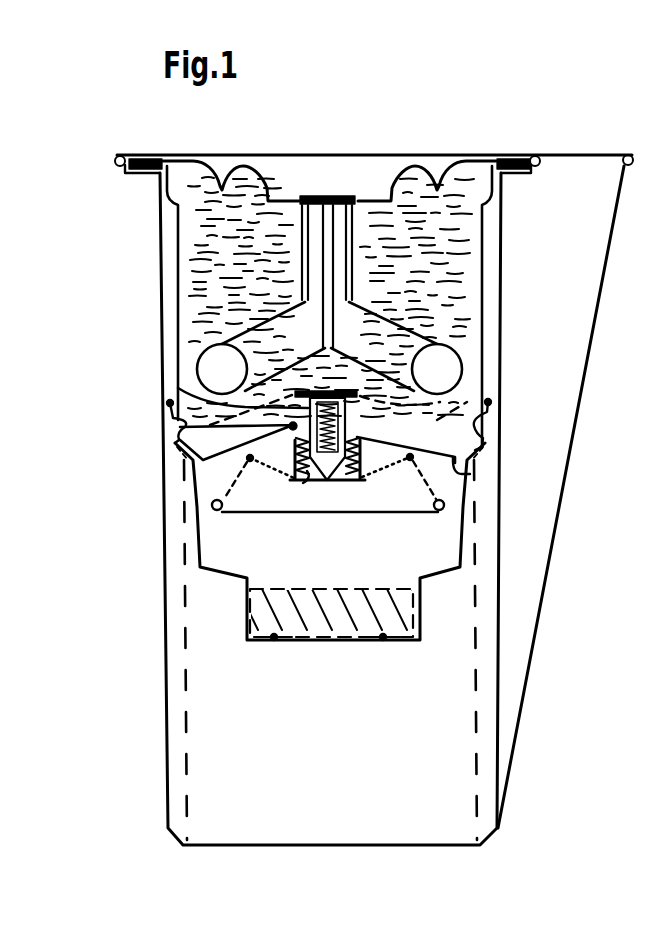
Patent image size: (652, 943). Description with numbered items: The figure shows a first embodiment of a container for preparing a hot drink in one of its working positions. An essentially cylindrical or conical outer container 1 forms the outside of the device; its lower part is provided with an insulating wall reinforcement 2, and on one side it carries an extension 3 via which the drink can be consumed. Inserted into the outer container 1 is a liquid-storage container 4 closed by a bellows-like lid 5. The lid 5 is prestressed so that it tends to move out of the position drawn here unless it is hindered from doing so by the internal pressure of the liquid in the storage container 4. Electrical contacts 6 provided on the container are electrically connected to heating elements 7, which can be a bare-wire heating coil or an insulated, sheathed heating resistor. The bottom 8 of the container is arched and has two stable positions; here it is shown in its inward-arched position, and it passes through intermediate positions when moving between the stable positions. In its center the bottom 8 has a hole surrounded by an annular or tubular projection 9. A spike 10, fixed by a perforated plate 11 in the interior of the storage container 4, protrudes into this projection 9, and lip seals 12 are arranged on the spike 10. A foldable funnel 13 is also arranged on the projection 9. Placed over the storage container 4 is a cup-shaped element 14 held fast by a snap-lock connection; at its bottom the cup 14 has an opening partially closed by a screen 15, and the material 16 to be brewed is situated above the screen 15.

The outer container 1 is at (210, 801).
The insulating wall reinforcement 2 is at (166, 616).
The extension 3 is at (568, 386).
The liquid-storage container 4 is at (184, 284).
The bellows-like lid 5 is at (242, 163).
The electrical contacts 6 is at (330, 197).
The heating elements 7 is at (461, 364).
The bottom 8 is at (470, 475).
The annular or tubular projection 9 is at (168, 428).
The spike 10 is at (190, 392).
The perforated plate 11 is at (481, 390).
The lip seals 12 is at (293, 478).
The foldable funnel 13 is at (393, 513).
The cup-shaped element 14 is at (466, 532).
The screen 15 is at (403, 640).
The material to be brewed 16 is at (308, 636).